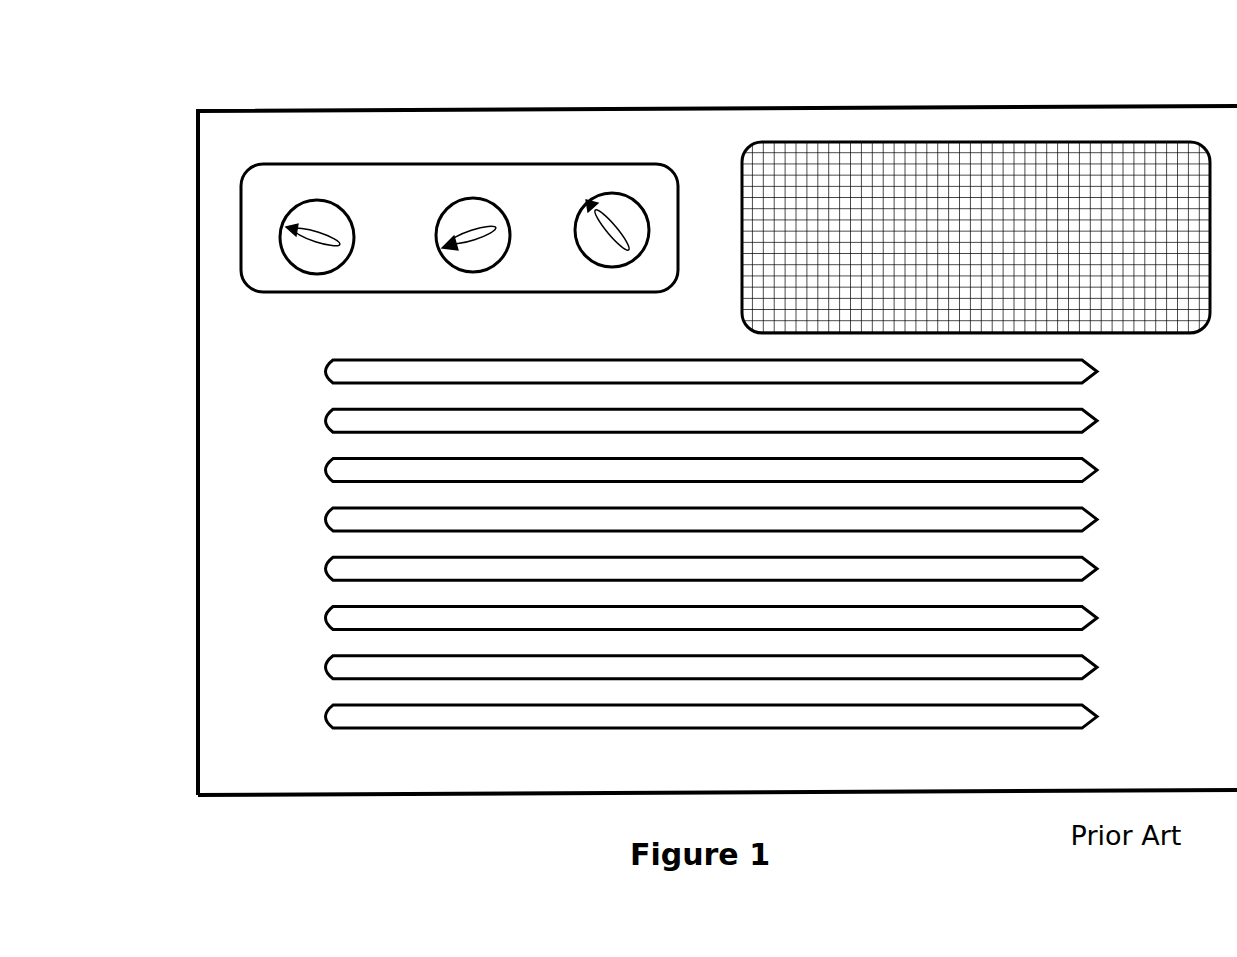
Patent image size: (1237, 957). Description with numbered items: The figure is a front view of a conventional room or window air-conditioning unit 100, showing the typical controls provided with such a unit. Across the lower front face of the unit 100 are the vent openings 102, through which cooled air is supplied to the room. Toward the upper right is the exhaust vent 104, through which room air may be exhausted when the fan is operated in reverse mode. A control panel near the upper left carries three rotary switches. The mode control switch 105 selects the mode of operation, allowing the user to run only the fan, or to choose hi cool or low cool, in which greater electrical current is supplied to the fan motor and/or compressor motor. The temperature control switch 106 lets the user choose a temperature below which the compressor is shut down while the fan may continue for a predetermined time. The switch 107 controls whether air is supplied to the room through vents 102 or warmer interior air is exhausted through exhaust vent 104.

The room or window air-conditioning unit 100 is at (717, 415).
The vent openings 102 is at (746, 544).
The exhaust vent openings 104 is at (976, 274).
The mode control switch 105 is at (325, 265).
The temperature control switch 106 is at (459, 257).
The exhaust control switch 107 is at (601, 267).